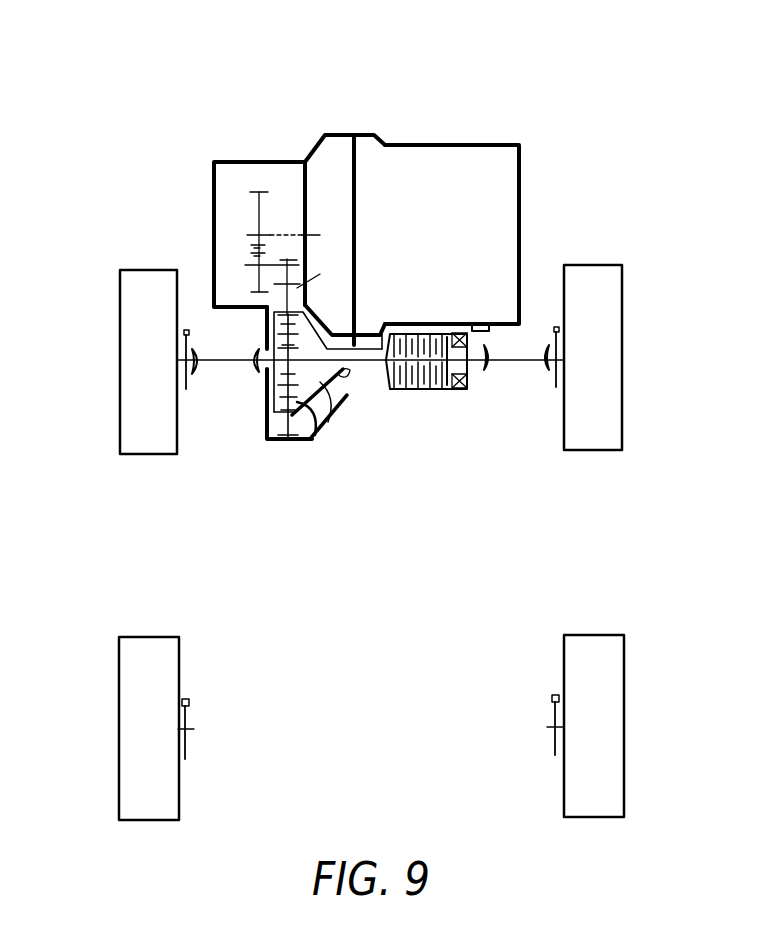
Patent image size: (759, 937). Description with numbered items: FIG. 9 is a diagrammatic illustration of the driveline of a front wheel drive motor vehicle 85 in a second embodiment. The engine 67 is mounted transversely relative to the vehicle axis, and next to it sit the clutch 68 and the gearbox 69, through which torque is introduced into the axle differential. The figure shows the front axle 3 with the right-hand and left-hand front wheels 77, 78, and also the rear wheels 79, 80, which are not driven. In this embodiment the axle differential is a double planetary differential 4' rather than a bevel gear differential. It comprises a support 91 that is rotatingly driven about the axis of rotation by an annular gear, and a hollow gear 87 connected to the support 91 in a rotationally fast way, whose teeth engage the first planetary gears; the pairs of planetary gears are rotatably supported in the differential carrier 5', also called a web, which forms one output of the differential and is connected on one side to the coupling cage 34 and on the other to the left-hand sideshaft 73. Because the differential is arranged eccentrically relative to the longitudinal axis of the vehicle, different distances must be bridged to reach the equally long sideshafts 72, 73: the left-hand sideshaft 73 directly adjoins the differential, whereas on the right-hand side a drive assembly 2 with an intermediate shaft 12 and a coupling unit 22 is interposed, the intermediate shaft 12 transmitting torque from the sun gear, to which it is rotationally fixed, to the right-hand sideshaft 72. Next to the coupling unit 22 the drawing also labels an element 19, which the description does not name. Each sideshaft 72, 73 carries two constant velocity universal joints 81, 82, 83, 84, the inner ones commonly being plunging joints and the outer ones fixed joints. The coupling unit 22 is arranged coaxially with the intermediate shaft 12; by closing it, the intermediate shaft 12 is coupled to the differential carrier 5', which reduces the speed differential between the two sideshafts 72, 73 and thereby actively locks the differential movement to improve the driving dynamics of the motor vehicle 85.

The motor vehicle 85 is at (410, 110).
The gearbox 69 is at (233, 170).
The clutch 68 is at (328, 152).
The engine 67 is at (467, 165).
The left-hand front wheel 78 is at (137, 287).
The right-hand front wheel 77 is at (600, 277).
The rear wheel 80 is at (138, 652).
The rear wheel 79 is at (603, 670).
The front axle 3 is at (632, 327).
The constant velocity universal joint 84 is at (193, 343).
The constant velocity universal joint 81 is at (543, 380).
The left-hand sideshaft 73 is at (217, 363).
The constant velocity universal joint 83 is at (253, 370).
The constant velocity universal joint 82 is at (483, 380).
The right-hand sideshaft 72 is at (512, 362).
The intermediate shaft 12 is at (380, 330).
The coupling unit 22 is at (420, 326).
The output shaft 19 is at (472, 318).
The coupling cage 34 is at (425, 388).
The differential carrier 5' is at (317, 315).
The hollow gear 87 is at (320, 423).
The support 91 is at (305, 442).
The drive assembly 2 is at (399, 402).
The double planetary differential 4' is at (247, 489).